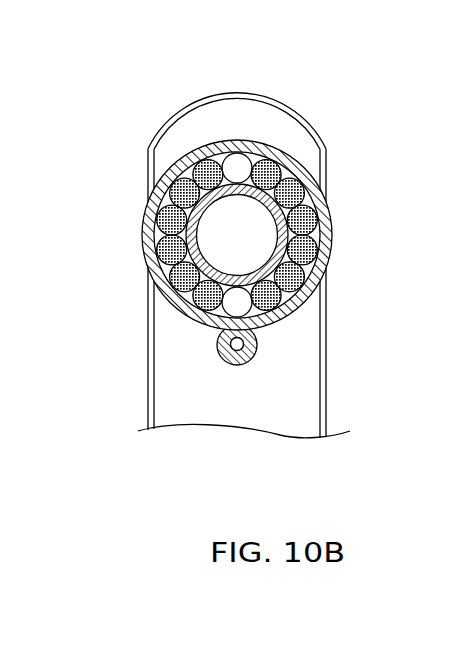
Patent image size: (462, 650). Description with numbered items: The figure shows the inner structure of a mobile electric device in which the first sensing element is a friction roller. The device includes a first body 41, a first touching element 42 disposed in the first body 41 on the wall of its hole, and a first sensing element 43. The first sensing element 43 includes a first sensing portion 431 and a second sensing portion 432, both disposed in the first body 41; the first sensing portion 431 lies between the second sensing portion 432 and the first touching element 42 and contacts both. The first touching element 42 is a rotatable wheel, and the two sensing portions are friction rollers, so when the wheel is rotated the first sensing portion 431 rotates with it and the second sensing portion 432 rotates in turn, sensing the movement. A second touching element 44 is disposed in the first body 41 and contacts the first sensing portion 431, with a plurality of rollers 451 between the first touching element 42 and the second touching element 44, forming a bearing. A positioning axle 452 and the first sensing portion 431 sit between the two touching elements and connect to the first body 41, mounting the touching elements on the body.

The first body 41 is at (203, 99).
The first touching element 42 is at (283, 250).
The first sensing element 43 is at (317, 364).
The first sensing portion 431 is at (248, 313).
The second sensing portion 432 is at (241, 350).
The second touching element 44 is at (150, 242).
The rollers 451 is at (171, 277).
The positioning axle 452 is at (240, 163).